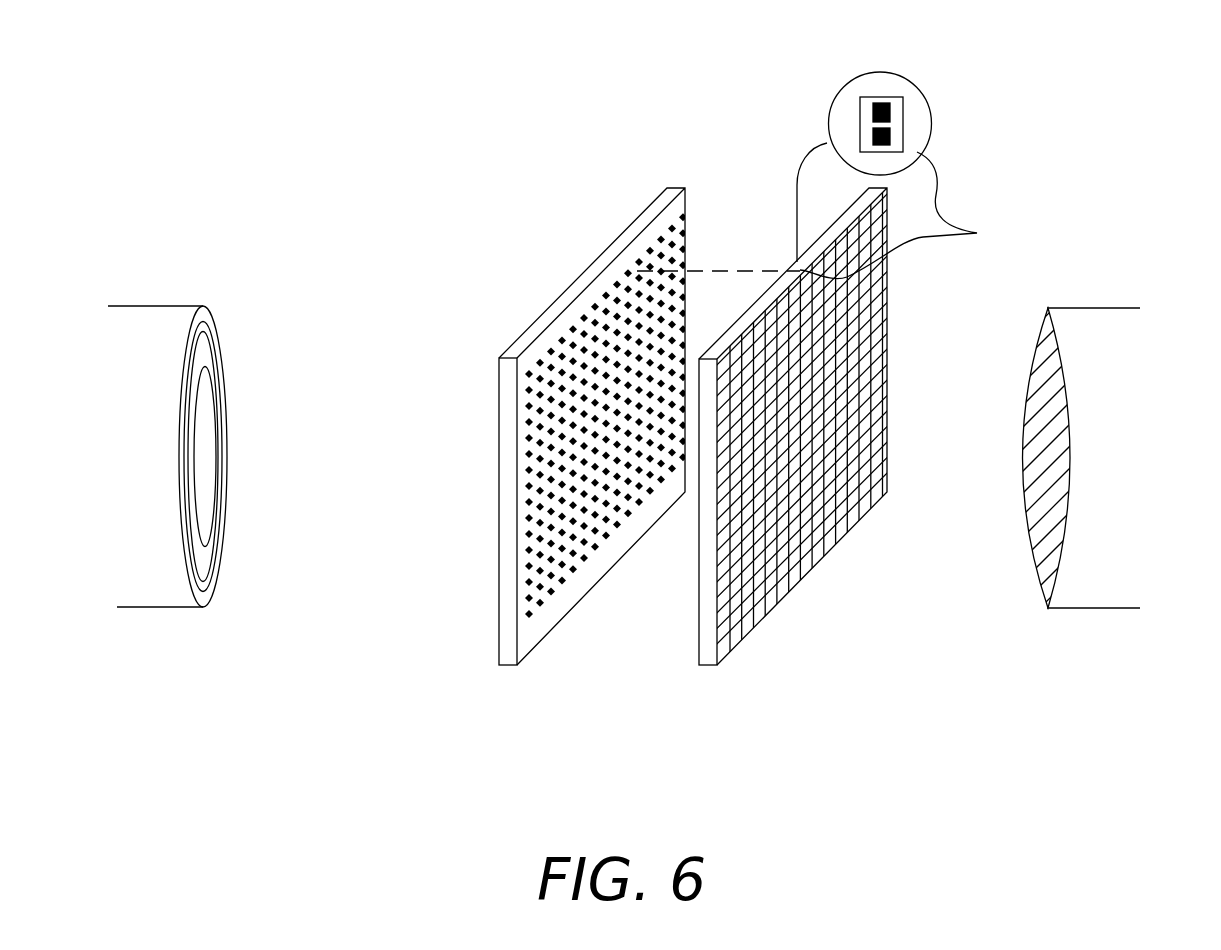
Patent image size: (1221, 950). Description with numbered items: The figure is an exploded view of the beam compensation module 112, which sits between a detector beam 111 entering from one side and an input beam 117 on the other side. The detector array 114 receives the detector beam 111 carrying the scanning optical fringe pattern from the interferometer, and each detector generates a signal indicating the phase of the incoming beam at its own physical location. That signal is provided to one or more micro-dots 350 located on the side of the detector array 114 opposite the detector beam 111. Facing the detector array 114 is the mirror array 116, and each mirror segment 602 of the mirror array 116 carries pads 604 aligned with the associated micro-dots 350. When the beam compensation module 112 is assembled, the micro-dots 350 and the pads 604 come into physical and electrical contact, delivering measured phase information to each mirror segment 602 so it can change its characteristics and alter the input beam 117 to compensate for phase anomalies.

The detector beam 111 is at (162, 607).
The beam compensation module 112 is at (950, 88).
The detector array 114 is at (542, 486).
The mirror array 116 is at (705, 665).
The input beam 117 is at (1095, 608).
The micro-dots 350 is at (572, 580).
The mirror segment 602 is at (920, 175).
The pads 604 is at (891, 107).